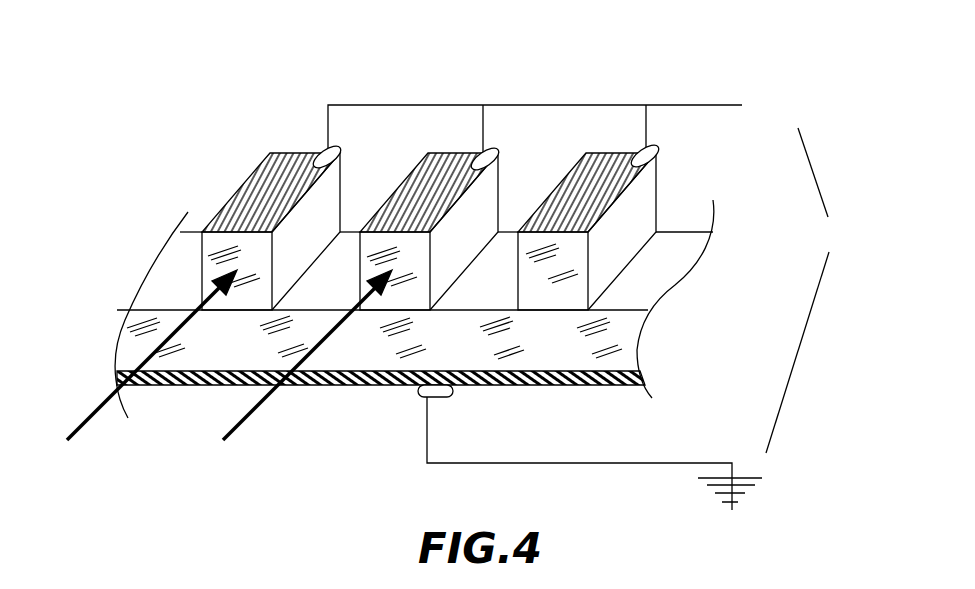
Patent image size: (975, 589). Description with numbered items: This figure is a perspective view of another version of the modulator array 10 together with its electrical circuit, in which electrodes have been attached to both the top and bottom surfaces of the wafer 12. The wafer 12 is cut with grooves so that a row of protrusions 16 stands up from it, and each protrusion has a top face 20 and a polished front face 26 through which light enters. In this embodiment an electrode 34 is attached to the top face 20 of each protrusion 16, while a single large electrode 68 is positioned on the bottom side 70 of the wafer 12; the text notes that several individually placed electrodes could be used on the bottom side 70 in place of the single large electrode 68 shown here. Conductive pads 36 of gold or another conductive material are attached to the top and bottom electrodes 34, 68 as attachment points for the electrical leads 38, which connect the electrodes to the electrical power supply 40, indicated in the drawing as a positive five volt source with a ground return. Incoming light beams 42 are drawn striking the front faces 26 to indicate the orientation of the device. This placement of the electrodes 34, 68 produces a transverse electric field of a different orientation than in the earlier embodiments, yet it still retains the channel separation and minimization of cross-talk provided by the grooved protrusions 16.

The modulator array 10 is at (642, 80).
The wafer 12 is at (633, 330).
The protrusions 16 is at (633, 205).
The top face 20 is at (573, 232).
The front face 26 is at (540, 275).
The electrodes 34 is at (283, 173).
The conductive pads 36 is at (317, 157).
The electrical leads 38 is at (542, 105).
The electrical power supply 40 is at (799, 273).
The incoming light beams 42 is at (233, 422).
The single large electrode 68 is at (380, 377).
The bottom side 70 is at (592, 377).